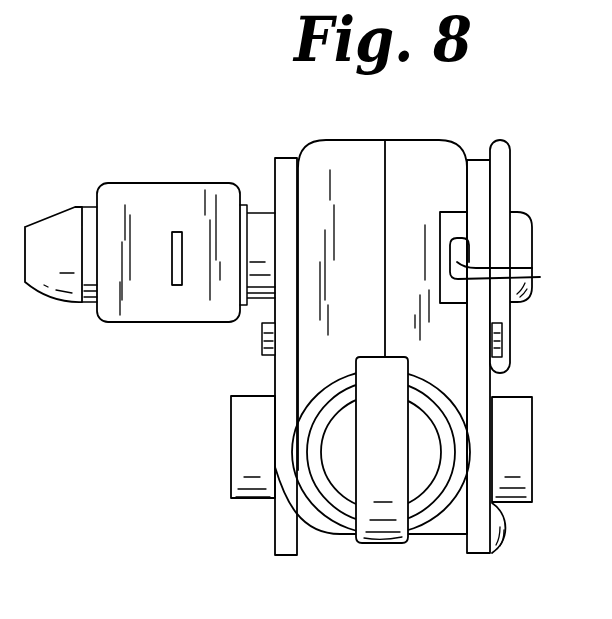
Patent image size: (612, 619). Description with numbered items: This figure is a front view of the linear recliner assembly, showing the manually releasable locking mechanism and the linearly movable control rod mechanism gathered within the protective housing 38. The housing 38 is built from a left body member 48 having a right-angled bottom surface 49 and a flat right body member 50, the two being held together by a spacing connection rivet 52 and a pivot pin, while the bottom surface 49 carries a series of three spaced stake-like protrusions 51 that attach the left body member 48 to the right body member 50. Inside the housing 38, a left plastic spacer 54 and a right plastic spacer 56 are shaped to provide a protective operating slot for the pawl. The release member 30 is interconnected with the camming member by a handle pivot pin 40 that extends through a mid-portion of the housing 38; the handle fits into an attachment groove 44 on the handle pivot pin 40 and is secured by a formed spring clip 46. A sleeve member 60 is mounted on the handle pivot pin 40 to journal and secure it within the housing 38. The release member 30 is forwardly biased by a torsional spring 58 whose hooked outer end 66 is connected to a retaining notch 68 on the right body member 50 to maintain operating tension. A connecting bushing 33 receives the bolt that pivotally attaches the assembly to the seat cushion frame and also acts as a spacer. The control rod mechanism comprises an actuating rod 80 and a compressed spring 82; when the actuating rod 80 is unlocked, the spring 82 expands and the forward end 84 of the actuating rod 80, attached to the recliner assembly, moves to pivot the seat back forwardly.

The release member 30 is at (118, 190).
The connecting bushing 33 is at (237, 478).
The protective housing 38 is at (203, 440).
The handle pivot pin 40 is at (56, 222).
The attachment groove 44 is at (178, 288).
The spring clip 46 is at (172, 232).
The left body member 48 is at (273, 163).
The bottom surface 49 is at (325, 535).
The right body member 50 is at (492, 385).
The stake-like protrusions 51 is at (504, 531).
The spacing connection rivet 52 is at (502, 333).
The left plastic spacer 54 is at (344, 158).
The right plastic spacer 56 is at (402, 155).
The spring 58 is at (502, 172).
The sleeve member 60 is at (520, 238).
The hooked outer end 66 is at (538, 276).
The retaining notch 68 is at (450, 230).
The actuating rod 80 is at (427, 448).
The spring 82 is at (428, 512).
The forward end 84 is at (385, 545).